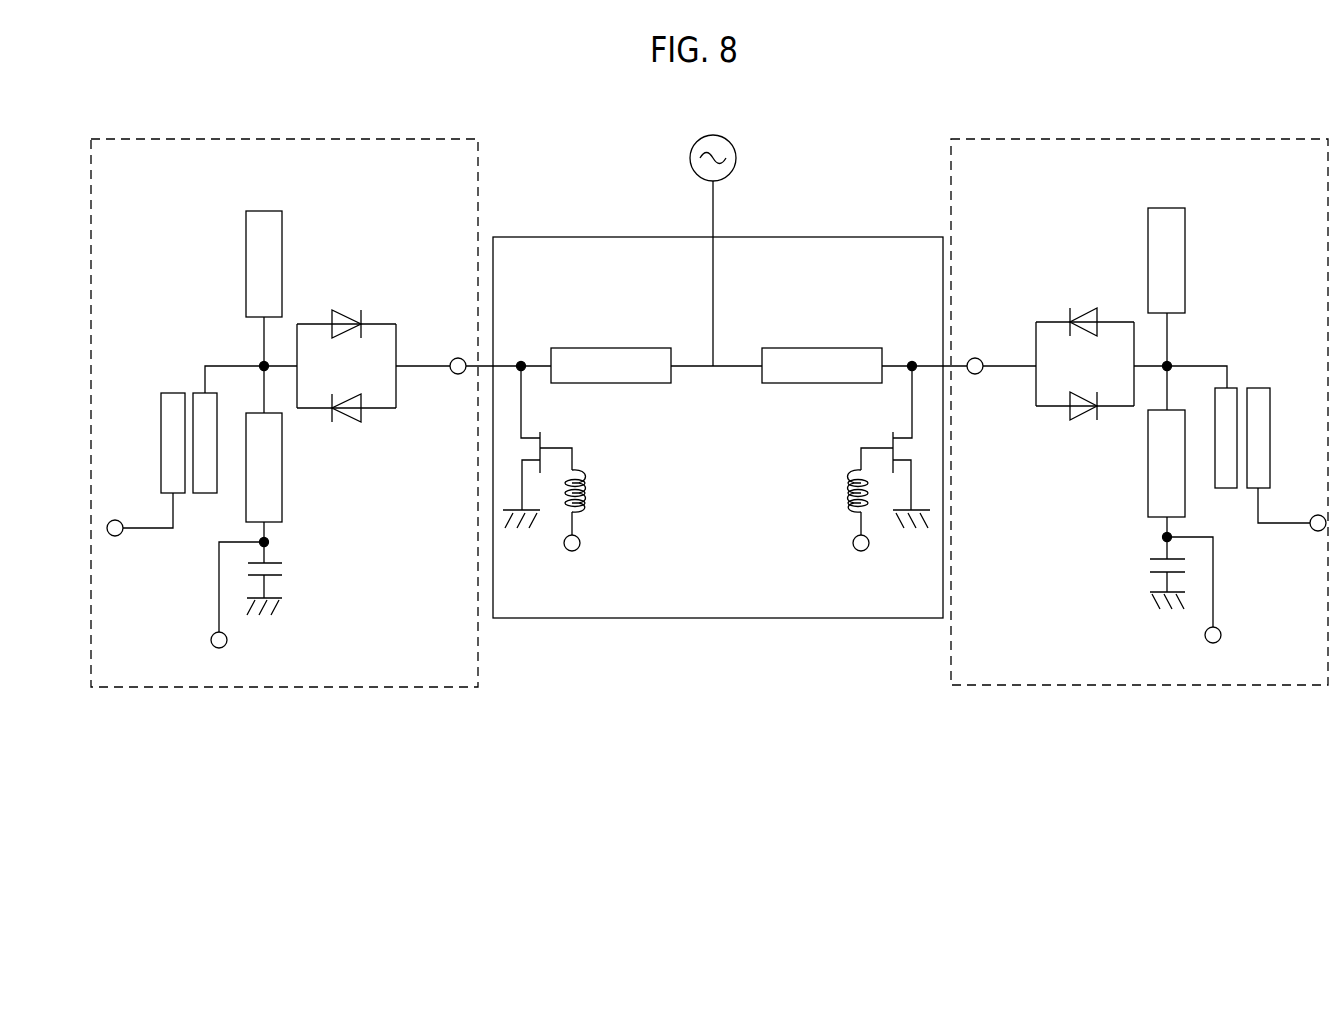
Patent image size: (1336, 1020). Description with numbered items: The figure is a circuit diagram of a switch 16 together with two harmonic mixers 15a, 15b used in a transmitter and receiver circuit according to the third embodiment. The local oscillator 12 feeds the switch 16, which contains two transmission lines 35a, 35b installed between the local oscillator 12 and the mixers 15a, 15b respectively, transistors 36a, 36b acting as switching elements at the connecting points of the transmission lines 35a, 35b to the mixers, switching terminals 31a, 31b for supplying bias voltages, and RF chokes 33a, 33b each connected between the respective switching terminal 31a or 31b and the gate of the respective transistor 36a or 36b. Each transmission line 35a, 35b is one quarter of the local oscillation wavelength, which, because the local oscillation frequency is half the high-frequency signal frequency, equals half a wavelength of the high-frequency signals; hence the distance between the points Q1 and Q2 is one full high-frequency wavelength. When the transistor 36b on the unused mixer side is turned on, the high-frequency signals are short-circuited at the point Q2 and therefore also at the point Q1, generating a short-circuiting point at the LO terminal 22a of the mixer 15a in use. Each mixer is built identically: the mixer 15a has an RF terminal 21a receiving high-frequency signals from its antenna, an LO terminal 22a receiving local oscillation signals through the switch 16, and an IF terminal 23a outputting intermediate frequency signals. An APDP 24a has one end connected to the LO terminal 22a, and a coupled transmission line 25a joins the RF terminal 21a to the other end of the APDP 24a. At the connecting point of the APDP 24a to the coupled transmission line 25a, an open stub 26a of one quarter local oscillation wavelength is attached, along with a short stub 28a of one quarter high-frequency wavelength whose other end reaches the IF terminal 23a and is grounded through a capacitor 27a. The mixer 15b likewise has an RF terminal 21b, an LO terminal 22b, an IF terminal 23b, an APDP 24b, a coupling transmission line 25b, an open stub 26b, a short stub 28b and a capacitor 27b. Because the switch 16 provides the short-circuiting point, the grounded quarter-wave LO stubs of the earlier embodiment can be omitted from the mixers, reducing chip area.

The local oscillator 12 is at (690, 160).
The switch 16 is at (885, 237).
The point Q1 is at (516, 352).
The point Q2 is at (914, 352).
The transmission line 35a is at (632, 348).
The transmission line 35b is at (815, 348).
The transistor 36a is at (545, 432).
The transistor 36b is at (888, 432).
The RF choke 33a is at (590, 490).
The RF choke 33b is at (843, 490).
The switching terminal 31a is at (580, 548).
The switching terminal 31b is at (855, 548).
The mixer 15a is at (478, 650).
The mixer 15b is at (950, 653).
The RF terminal 21a is at (115, 518).
The RF terminal 21b is at (1318, 515).
The LO terminal 22a is at (456, 375).
The LO terminal 22b is at (975, 375).
The IF terminal 23a is at (210, 640).
The IF terminal 23b is at (1222, 637).
The APDP 24a is at (357, 428).
The APDP 24b is at (1080, 430).
The coupled transmission line 25a is at (170, 383).
The coupling transmission line 25b is at (1262, 380).
The open stub 26a is at (264, 211).
The open stub 26b is at (1167, 208).
The capacitor 27a is at (290, 565).
The capacitor 27b is at (1148, 559).
The short stub 28a is at (246, 512).
The short stub 28b is at (1185, 508).